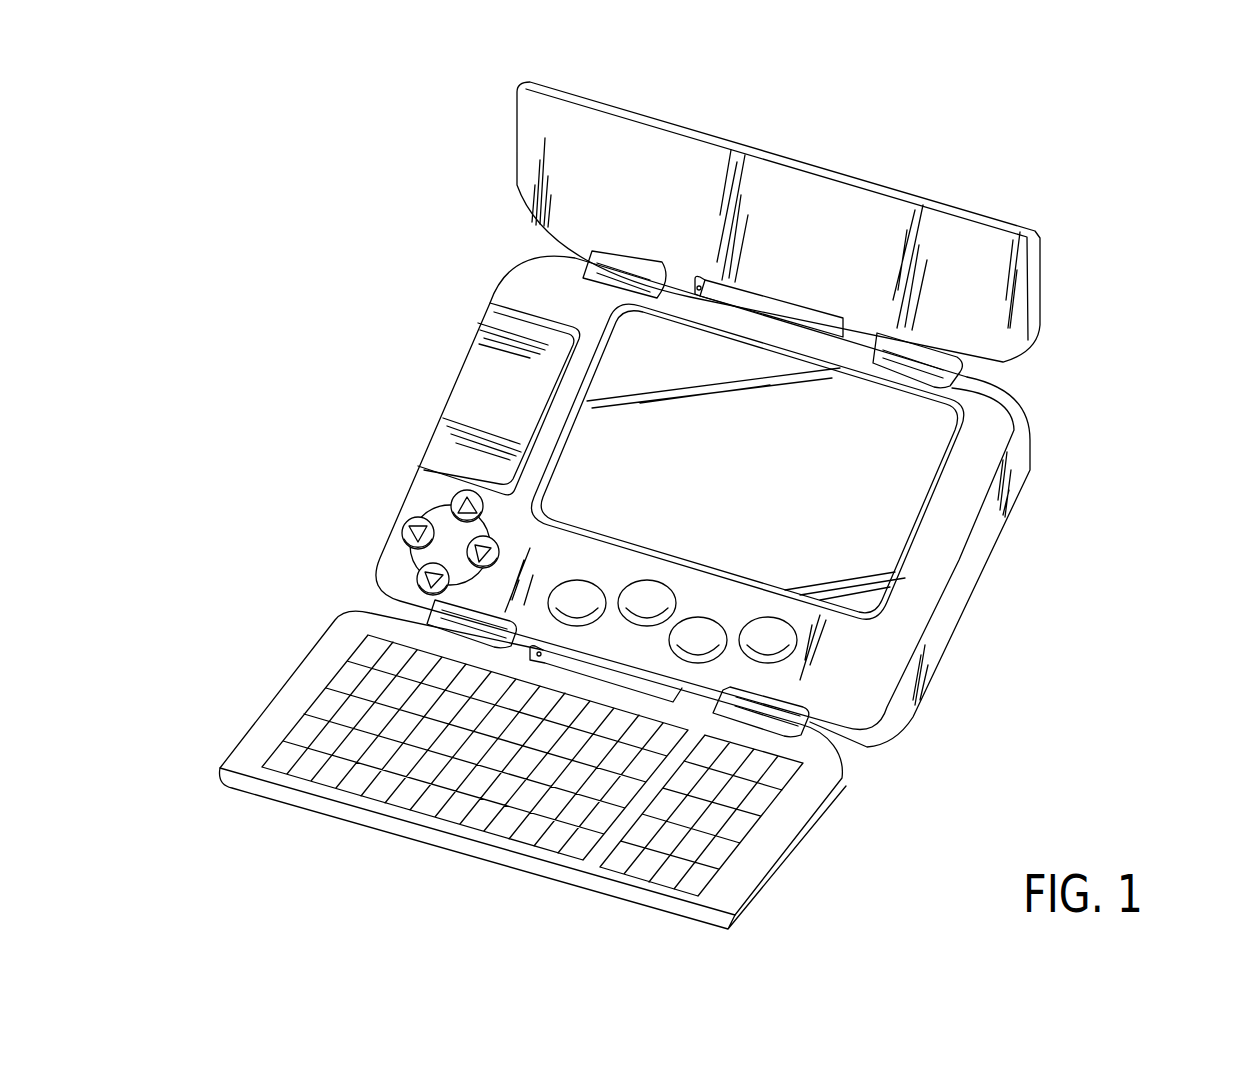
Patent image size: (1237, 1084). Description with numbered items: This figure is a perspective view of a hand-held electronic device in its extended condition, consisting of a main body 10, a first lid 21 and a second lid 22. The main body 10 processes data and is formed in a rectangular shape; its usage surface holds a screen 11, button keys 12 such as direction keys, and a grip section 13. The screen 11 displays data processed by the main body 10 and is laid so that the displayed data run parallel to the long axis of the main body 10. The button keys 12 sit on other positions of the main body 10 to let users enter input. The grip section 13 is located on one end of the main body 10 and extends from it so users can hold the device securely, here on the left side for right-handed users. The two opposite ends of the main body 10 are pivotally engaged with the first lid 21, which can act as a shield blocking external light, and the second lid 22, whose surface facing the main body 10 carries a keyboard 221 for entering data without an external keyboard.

The main body 10 is at (750, 499).
The screen 11 is at (887, 560).
The button keys 12 is at (385, 543).
The grip section 13 is at (490, 384).
The first lid 21 is at (1010, 303).
The second lid 22 is at (565, 770).
The keyboard 221 is at (330, 702).